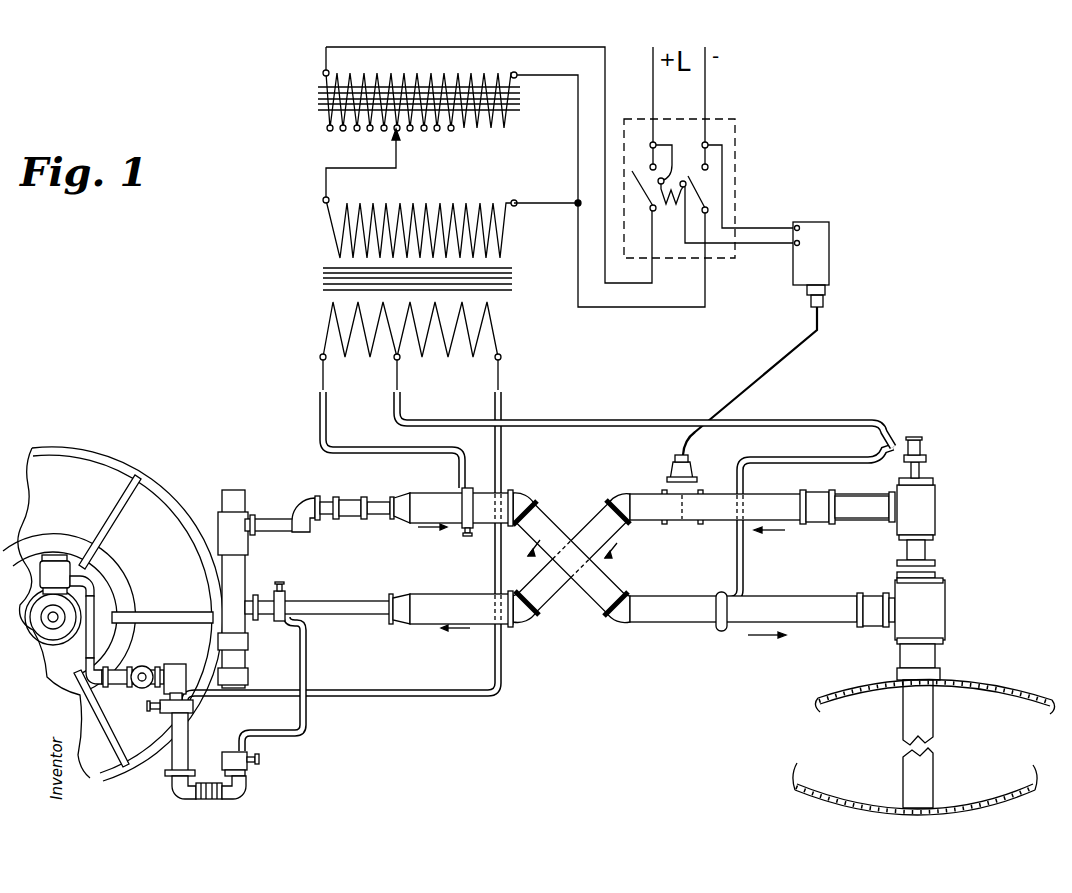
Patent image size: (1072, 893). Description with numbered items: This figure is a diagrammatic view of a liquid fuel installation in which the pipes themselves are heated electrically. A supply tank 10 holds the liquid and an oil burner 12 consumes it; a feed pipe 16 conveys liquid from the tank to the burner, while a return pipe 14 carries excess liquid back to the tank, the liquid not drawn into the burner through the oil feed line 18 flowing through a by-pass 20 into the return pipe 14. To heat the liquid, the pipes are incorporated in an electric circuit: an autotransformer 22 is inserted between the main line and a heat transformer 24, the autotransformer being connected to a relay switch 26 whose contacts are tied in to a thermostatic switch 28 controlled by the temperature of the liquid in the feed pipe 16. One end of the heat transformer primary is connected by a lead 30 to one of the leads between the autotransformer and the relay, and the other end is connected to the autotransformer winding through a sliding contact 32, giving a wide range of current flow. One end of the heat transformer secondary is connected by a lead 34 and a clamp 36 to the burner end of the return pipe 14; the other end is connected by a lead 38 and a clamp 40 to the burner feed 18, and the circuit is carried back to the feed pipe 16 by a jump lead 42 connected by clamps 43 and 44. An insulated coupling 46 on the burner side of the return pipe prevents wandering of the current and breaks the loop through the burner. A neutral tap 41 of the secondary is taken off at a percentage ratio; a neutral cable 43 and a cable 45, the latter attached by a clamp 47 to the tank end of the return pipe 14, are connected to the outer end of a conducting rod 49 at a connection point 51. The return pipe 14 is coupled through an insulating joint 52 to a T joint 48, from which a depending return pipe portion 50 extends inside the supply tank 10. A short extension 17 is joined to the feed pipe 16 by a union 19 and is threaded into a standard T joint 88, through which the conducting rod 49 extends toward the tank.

The supply tank 10 is at (1020, 692).
The oil burner 12 is at (77, 467).
The return pipe 14 is at (440, 489).
The supply or feed pipe 16 is at (452, 601).
The short extension 17 is at (865, 508).
The oil feed line 18 is at (207, 800).
The union 19 is at (818, 523).
The by-pass 20 is at (232, 577).
The autotransformer 22 is at (298, 98).
The heat transformer 24 is at (302, 284).
The relay switch 26 is at (743, 178).
The thermostatic switch 28 is at (820, 265).
The lead 30 is at (548, 208).
The sliding contact 32 is at (399, 156).
The lead 34 is at (317, 446).
The clamp 36 is at (470, 517).
The lead 38 is at (452, 694).
The clamp 40 is at (180, 713).
The neutral tap 41 is at (400, 371).
The jump lead 42 is at (303, 676).
The neutral cable 43 is at (616, 423).
The clamp 44 is at (286, 607).
The cable 45 is at (750, 443).
The insulated coupling 46 is at (352, 505).
The clamp 47 is at (718, 627).
The T joint 48 is at (930, 620).
The conducting rod 49 is at (926, 461).
The depending return pipe portion 50 is at (960, 670).
The connection point 51 is at (922, 446).
The insulating joint 52 is at (866, 627).
The standard T joint 88 is at (920, 515).